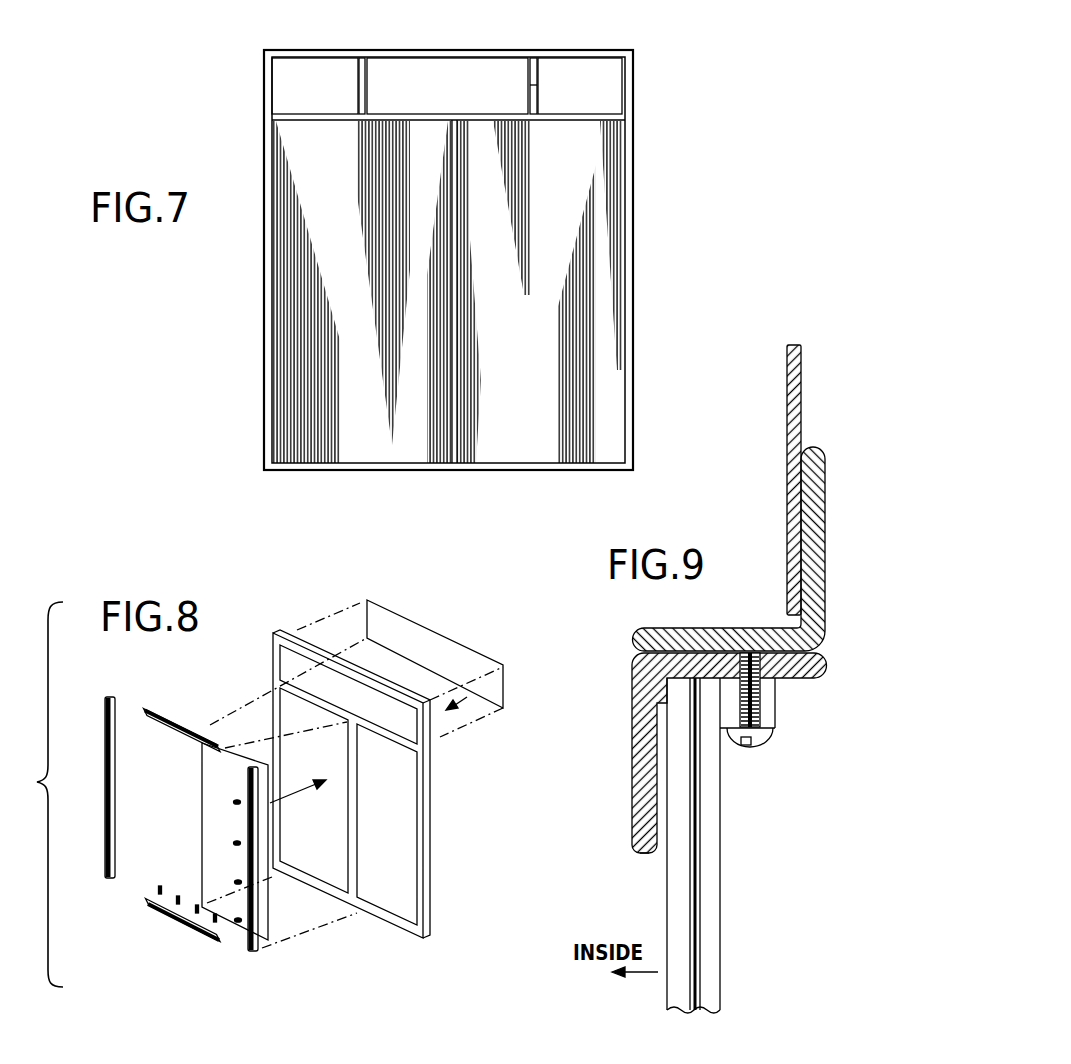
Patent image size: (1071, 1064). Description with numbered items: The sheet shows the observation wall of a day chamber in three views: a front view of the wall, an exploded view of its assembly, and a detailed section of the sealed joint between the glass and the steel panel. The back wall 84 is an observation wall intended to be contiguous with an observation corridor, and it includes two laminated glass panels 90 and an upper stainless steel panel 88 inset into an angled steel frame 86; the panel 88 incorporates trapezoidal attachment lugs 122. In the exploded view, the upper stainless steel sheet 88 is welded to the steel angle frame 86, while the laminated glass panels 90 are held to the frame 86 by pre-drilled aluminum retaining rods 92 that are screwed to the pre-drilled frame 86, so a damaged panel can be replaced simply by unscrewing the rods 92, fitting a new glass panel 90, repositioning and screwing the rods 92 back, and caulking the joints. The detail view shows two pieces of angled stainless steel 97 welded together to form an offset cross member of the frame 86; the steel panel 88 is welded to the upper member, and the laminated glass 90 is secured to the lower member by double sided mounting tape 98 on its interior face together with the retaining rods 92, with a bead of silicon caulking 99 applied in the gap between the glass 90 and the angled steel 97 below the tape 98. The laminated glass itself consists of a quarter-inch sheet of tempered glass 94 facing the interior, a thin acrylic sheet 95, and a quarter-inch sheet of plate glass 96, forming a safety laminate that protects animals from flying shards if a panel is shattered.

In FIG. 7, the back wall 84 is at (267, 90).
In FIG. 7, the angled steel frame 86 is at (633, 228).
In FIG. 8, the angled steel frame 86 is at (432, 918).
In FIG. 7, the upper stainless steel panel 88 is at (447, 73).
In FIG. 8, the upper stainless steel panel 88 is at (448, 650).
In FIG. 9, the upper stainless steel panel 88 is at (790, 510).
In FIG. 7, the laminated glass panel 90 is at (293, 360).
In FIG. 8, the laminated glass panel 90 is at (232, 753).
In FIG. 9, the laminated glass panel 90 is at (698, 845).
In FIG. 8, the aluminum retaining rod 92 is at (145, 712).
In FIG. 9, the aluminum retaining rod 92 is at (773, 715).
In FIG. 9, the tempered glass 94 is at (682, 890).
In FIG. 9, the acrylic sheet 95 is at (697, 895).
In FIG. 9, the plate glass 96 is at (712, 908).
In FIG. 9, the angled stainless steel 97 is at (813, 588).
In FIG. 9, the double sided mounting tape 98 is at (650, 770).
In FIG. 9, the silicon caulking 99 is at (650, 860).
In FIG. 7, the trapezoidal attachment lug 122 is at (542, 72).